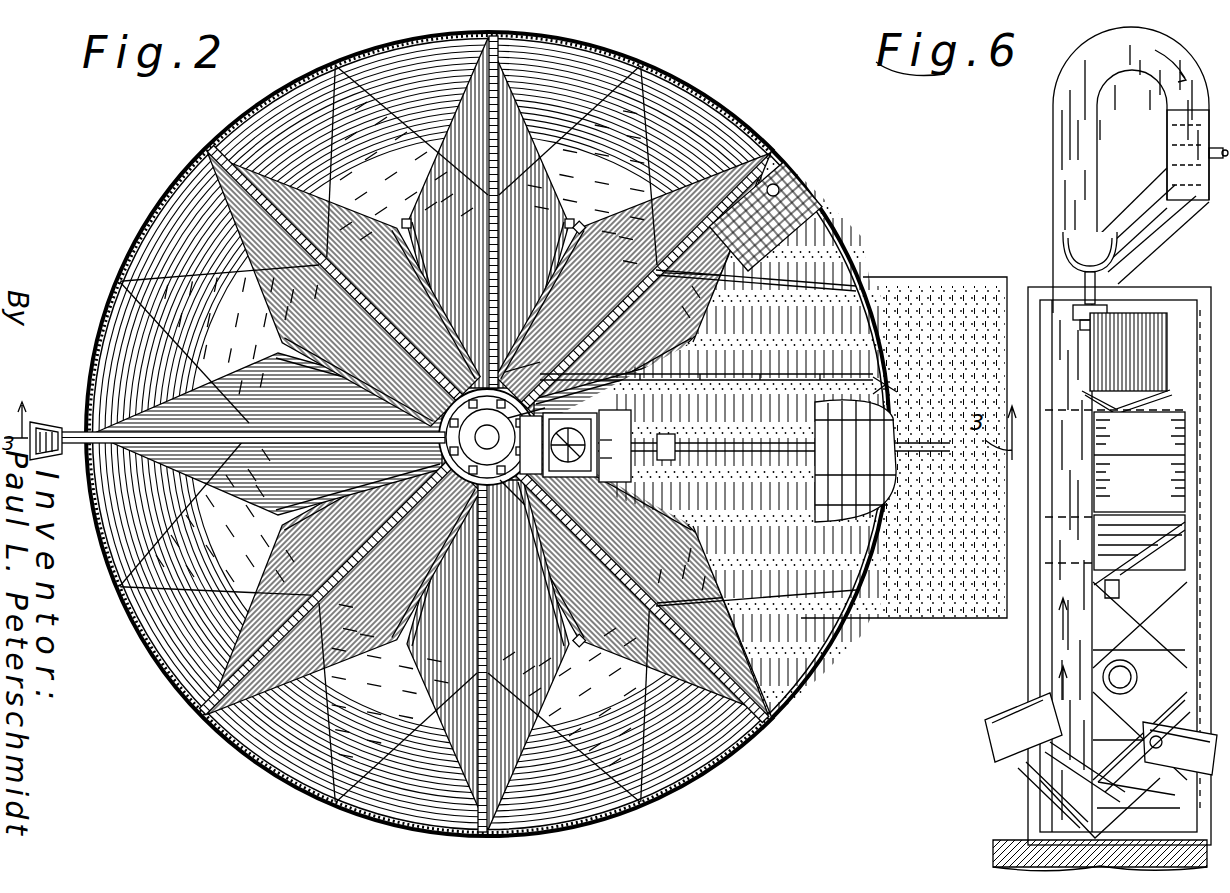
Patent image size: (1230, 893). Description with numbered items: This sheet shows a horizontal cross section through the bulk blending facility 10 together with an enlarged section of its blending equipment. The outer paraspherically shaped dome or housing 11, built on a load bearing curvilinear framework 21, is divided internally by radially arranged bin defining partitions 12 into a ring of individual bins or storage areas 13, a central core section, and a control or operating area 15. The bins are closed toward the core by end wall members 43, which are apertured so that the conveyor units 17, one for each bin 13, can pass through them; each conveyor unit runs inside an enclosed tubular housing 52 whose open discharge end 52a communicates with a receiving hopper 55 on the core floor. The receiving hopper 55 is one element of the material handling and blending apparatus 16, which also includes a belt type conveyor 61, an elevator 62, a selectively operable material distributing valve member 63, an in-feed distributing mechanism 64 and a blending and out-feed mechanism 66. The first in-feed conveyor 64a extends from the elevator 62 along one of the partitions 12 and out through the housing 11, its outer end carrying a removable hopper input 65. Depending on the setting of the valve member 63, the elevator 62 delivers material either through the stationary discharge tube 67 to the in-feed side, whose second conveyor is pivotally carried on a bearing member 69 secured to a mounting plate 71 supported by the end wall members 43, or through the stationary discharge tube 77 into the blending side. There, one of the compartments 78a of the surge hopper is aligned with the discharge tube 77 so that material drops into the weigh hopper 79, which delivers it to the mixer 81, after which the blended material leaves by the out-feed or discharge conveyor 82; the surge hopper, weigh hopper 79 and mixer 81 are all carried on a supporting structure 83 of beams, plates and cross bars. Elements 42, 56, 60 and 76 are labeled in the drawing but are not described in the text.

In FIG. 2, the bulk blending facility 10 is at (154, 168).
In FIG. 2, the dome or housing 11 is at (152, 244).
In FIG. 2, the partitions 12 is at (488, 434).
In FIG. 2, the bins or storage areas 13 is at (488, 434).
In FIG. 2, the control or operating area 15 is at (773, 434).
In FIG. 2, the material handling and blending apparatus 16 is at (612, 470).
In FIG. 2, the conveyor units 17 is at (488, 434).
In FIG. 2, the curvilinear framework 21 is at (806, 690).
In FIG. 2, the panel plate 42 is at (345, 176).
In FIG. 2, the end wall members 43 is at (546, 427).
In FIG. 6, the tubular housing 52 is at (990, 716).
In FIG. 6, the open discharge end 52a is at (1117, 754).
In FIG. 2, the receiving hopper 55 is at (527, 402).
In FIG. 6, the receiving hopper 55 is at (1050, 802).
In FIG. 2, the joint bracket 56 is at (497, 426).
In FIG. 2, the hub 60 is at (477, 437).
In FIG. 2, the belt type conveyor 61 is at (545, 418).
In FIG. 6, the belt type conveyor 61 is at (1060, 790).
In FIG. 2, the elevator 62 is at (579, 433).
In FIG. 6, the elevator 62 is at (1130, 429).
In FIG. 6, the material distributing valve member 63 is at (1170, 156).
In FIG. 6, the in-feed distributing mechanism 64 is at (1054, 267).
In FIG. 2, the first in-feed conveyor 64a is at (130, 452).
In FIG. 6, the first in-feed conveyor 64a is at (1124, 665).
In FIG. 2, the hopper input 65 is at (44, 424).
In FIG. 2, the blending and out-feed mechanism 66 is at (620, 418).
In FIG. 2, the discharge tube 67 is at (518, 502).
In FIG. 6, the discharge tube 67 is at (1124, 205).
In FIG. 6, the bearing member 69 is at (1082, 285).
In FIG. 6, the mounting plate 71 is at (1094, 322).
In FIG. 6, the hopper 76 is at (1115, 363).
In FIG. 2, the discharge tube 77 is at (611, 461).
In FIG. 6, the discharge tube 77 is at (1180, 240).
In FIG. 2, the compartments 78a is at (614, 439).
In FIG. 6, the weigh hopper 79 is at (1115, 498).
In FIG. 6, the mixer 81 is at (1042, 640).
In FIG. 2, the out-feed or discharge conveyor 82 is at (774, 461).
In FIG. 6, the supporting structure 83 is at (1180, 294).